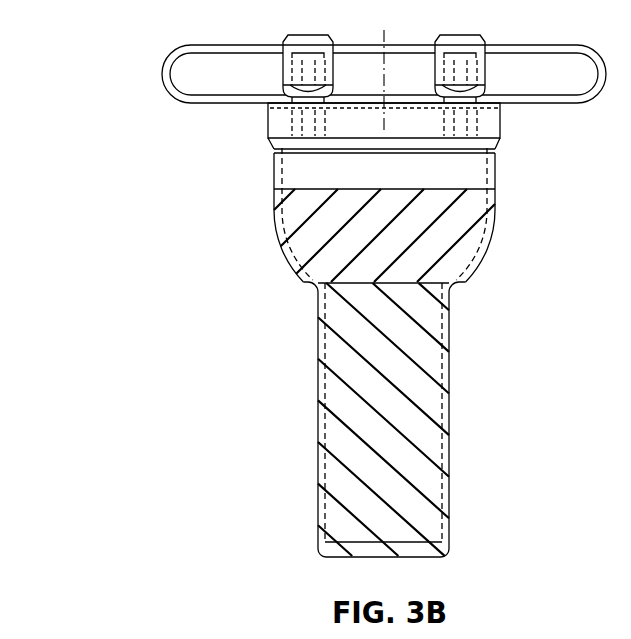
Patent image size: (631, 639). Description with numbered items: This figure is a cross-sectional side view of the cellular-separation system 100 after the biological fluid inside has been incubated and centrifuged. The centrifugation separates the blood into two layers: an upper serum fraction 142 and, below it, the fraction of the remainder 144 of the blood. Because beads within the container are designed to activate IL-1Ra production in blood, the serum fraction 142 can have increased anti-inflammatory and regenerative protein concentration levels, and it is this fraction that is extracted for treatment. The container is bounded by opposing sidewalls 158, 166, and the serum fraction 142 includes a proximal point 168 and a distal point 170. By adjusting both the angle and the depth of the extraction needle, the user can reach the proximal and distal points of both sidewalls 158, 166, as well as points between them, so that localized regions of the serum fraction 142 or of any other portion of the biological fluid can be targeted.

The cellular-separation system 100 is at (151, 45).
The serum fraction 142 is at (480, 213).
The fraction of the remainder 144 is at (435, 477).
The sidewall 158 is at (282, 239).
The sidewall 166 is at (488, 256).
The proximal point 168 is at (276, 188).
The distal point 170 is at (305, 281).